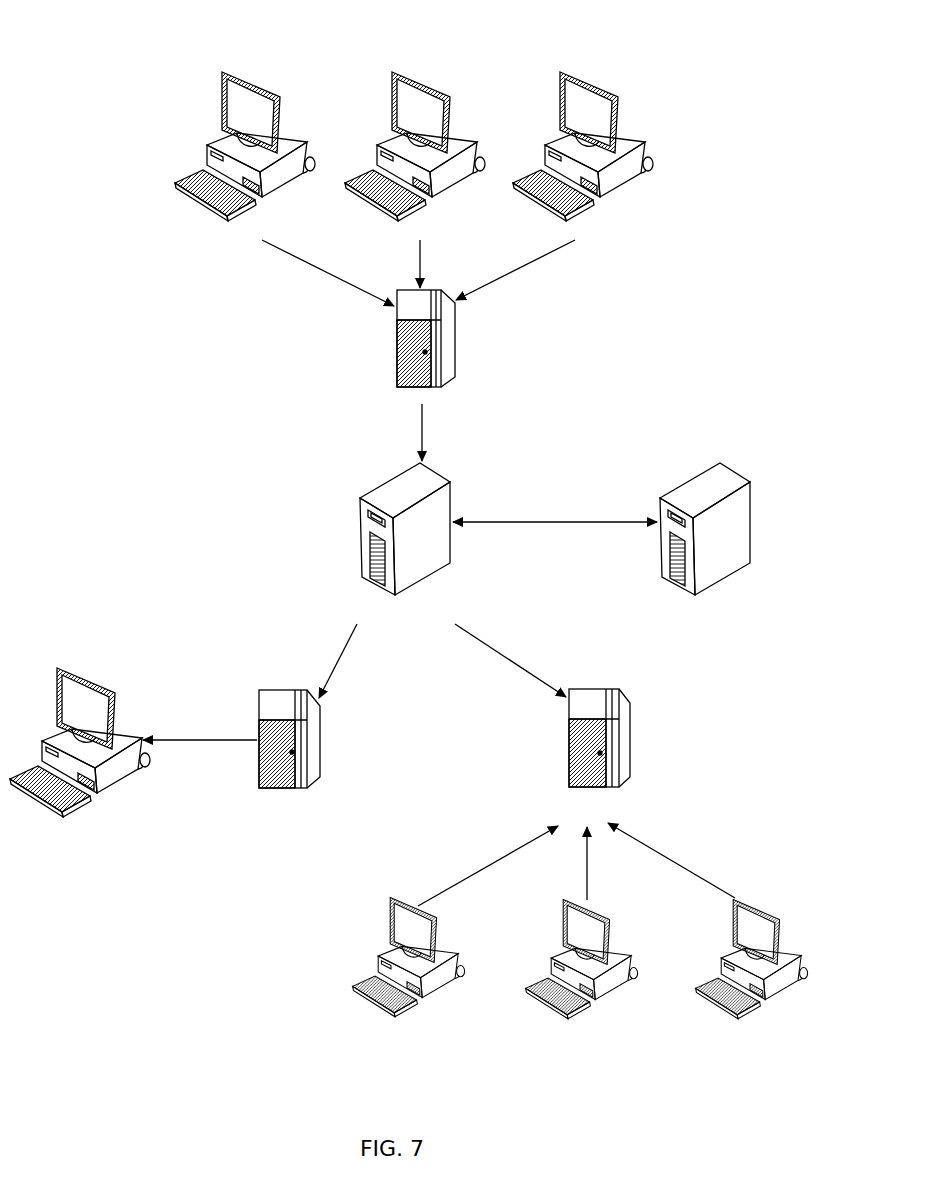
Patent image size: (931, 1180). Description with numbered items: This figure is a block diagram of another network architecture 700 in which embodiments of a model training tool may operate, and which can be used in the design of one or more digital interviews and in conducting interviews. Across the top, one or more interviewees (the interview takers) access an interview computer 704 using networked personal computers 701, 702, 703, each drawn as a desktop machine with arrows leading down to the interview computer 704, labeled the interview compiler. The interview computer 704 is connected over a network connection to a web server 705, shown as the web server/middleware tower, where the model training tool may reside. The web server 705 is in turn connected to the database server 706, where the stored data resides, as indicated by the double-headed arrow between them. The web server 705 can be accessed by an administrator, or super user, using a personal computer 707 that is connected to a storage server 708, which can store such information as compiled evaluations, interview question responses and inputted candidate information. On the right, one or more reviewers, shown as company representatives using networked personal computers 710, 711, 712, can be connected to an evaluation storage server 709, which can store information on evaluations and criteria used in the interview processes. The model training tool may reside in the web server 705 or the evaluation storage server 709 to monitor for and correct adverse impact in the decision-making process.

The network architecture 700 is at (156, 84).
The networked personal computer 701 is at (257, 80).
The networked personal computer 702 is at (424, 80).
The networked personal computer 703 is at (592, 80).
The interview computer 704 is at (456, 340).
The web server 705 is at (393, 482).
The database server 706 is at (692, 482).
The personal computer 707 is at (90, 680).
The storage server 708 is at (322, 742).
The evaluation storage server 709 is at (632, 742).
The networked personal computer 710 is at (388, 920).
The networked personal computer 711 is at (562, 921).
The networked personal computer 712 is at (732, 918).